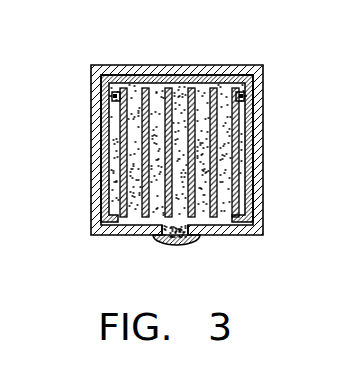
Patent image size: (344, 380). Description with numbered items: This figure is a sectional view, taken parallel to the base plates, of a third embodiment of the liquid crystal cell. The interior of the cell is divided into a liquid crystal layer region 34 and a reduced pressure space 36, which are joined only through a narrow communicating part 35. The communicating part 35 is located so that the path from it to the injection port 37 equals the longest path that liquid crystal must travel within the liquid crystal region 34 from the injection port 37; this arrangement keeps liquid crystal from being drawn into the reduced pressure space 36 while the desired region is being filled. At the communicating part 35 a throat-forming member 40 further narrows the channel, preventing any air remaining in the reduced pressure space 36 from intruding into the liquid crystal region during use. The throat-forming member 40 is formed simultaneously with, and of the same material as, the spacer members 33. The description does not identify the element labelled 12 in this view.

The housing 12 is at (263, 198).
The spacer members 33 is at (158, 236).
The liquid crystal layer region 34 is at (182, 87).
The communicating part 35 is at (105, 79).
The reduced pressure space 36 is at (105, 146).
The injection port 37 is at (182, 246).
The throat-forming member 40 is at (112, 97).